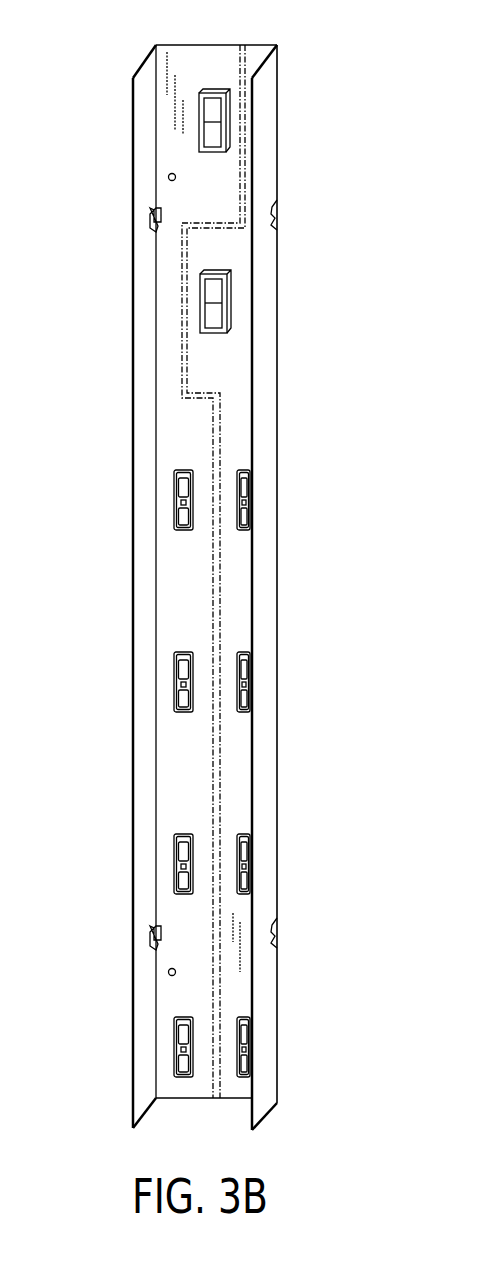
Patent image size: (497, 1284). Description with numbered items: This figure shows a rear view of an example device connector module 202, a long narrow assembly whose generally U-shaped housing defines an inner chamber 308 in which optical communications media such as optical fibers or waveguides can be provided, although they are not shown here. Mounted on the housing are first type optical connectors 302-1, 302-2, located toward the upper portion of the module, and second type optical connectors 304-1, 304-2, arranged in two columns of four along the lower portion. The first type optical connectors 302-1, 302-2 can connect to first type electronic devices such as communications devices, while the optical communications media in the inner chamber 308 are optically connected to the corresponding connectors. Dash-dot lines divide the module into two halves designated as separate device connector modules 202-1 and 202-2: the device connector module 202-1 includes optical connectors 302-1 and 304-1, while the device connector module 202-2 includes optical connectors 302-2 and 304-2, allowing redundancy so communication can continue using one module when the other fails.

The device connector module 202 is at (252, 31).
The device connector module 202-1 is at (266, 763).
The device connector module 202-2 is at (132, 762).
The inner chamber 308 is at (183, 62).
The first type optical connector 302-1 is at (232, 300).
The first type optical connector 302-2 is at (200, 122).
The second type optical connector 304-1 is at (248, 470).
The second type optical connector 304-2 is at (177, 470).